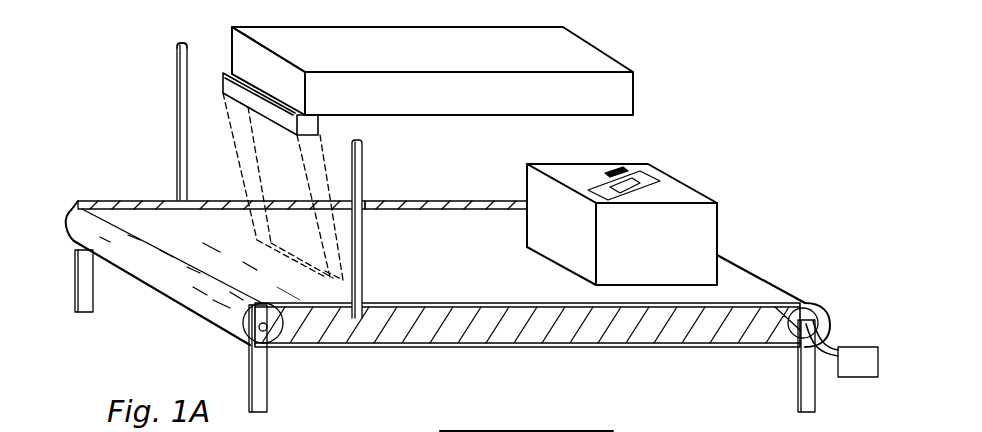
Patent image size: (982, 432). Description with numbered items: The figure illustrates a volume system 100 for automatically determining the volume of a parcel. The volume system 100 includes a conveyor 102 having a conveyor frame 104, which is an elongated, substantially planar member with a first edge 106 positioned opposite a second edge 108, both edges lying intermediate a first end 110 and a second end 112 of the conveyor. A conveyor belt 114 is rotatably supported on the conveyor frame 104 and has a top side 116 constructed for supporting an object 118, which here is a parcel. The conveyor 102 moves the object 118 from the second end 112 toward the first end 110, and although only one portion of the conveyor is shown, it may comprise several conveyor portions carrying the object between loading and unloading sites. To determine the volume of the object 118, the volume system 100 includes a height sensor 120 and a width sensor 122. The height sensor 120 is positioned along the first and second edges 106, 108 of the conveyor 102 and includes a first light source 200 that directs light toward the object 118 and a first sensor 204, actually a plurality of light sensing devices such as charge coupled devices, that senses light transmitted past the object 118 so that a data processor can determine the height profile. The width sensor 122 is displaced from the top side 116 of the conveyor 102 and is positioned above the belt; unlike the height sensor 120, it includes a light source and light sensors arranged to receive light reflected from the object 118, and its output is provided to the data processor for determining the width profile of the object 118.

The volume system 100 is at (702, 105).
The conveyor 102 is at (78, 178).
The conveyor frame 104 is at (263, 378).
The first edge 106 is at (150, 206).
The second edge 108 is at (510, 337).
The first end 110 is at (153, 277).
The second end 112 is at (748, 268).
The conveyor belt 114 is at (500, 227).
The top side 116 is at (490, 279).
The object 118 is at (680, 190).
The height sensor 120 is at (177, 88).
The width sensor 122 is at (223, 80).
The first light source 200 is at (363, 202).
The first sensor 204 is at (177, 92).